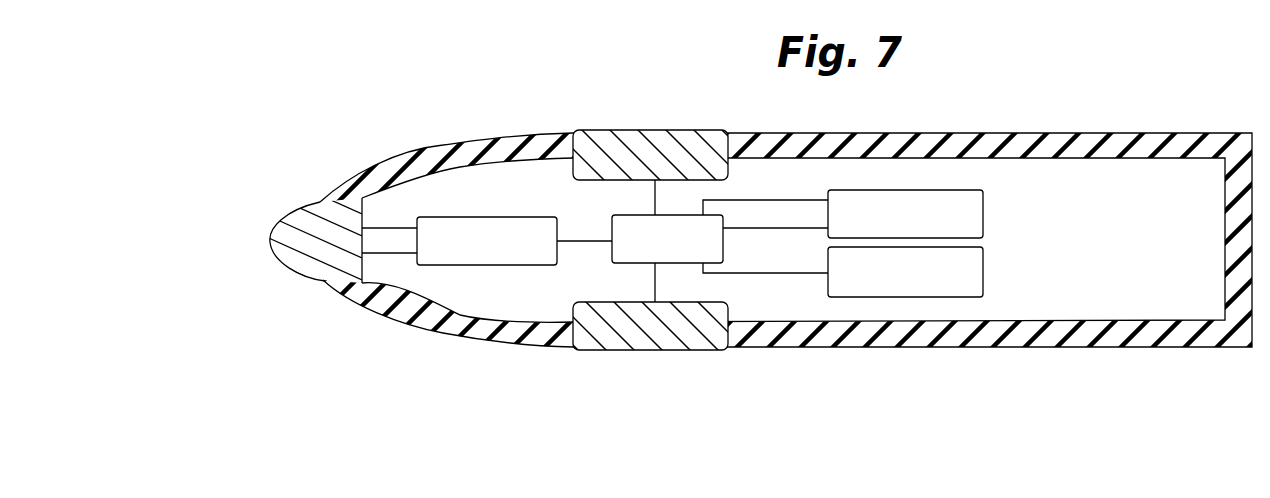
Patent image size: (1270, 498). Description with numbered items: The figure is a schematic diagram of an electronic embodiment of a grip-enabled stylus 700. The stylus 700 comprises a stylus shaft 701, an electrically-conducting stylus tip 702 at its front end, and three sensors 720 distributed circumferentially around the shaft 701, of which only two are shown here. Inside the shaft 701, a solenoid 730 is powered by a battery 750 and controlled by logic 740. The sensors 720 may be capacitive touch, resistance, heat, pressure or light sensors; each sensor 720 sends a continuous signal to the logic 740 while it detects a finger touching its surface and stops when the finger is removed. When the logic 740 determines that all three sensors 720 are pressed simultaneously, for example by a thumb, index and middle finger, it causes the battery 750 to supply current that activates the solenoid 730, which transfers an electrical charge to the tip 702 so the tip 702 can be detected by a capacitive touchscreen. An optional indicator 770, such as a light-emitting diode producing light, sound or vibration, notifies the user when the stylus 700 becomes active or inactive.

The grip-enabled stylus 700 is at (635, 250).
The stylus shaft 701 is at (427, 152).
The electrically-conducting stylus tip 702 is at (287, 263).
The sensor 720 is at (690, 131).
The solenoid 730 is at (520, 217).
The logic 740 is at (722, 222).
The battery 750 is at (973, 200).
The indicator 770 is at (842, 290).